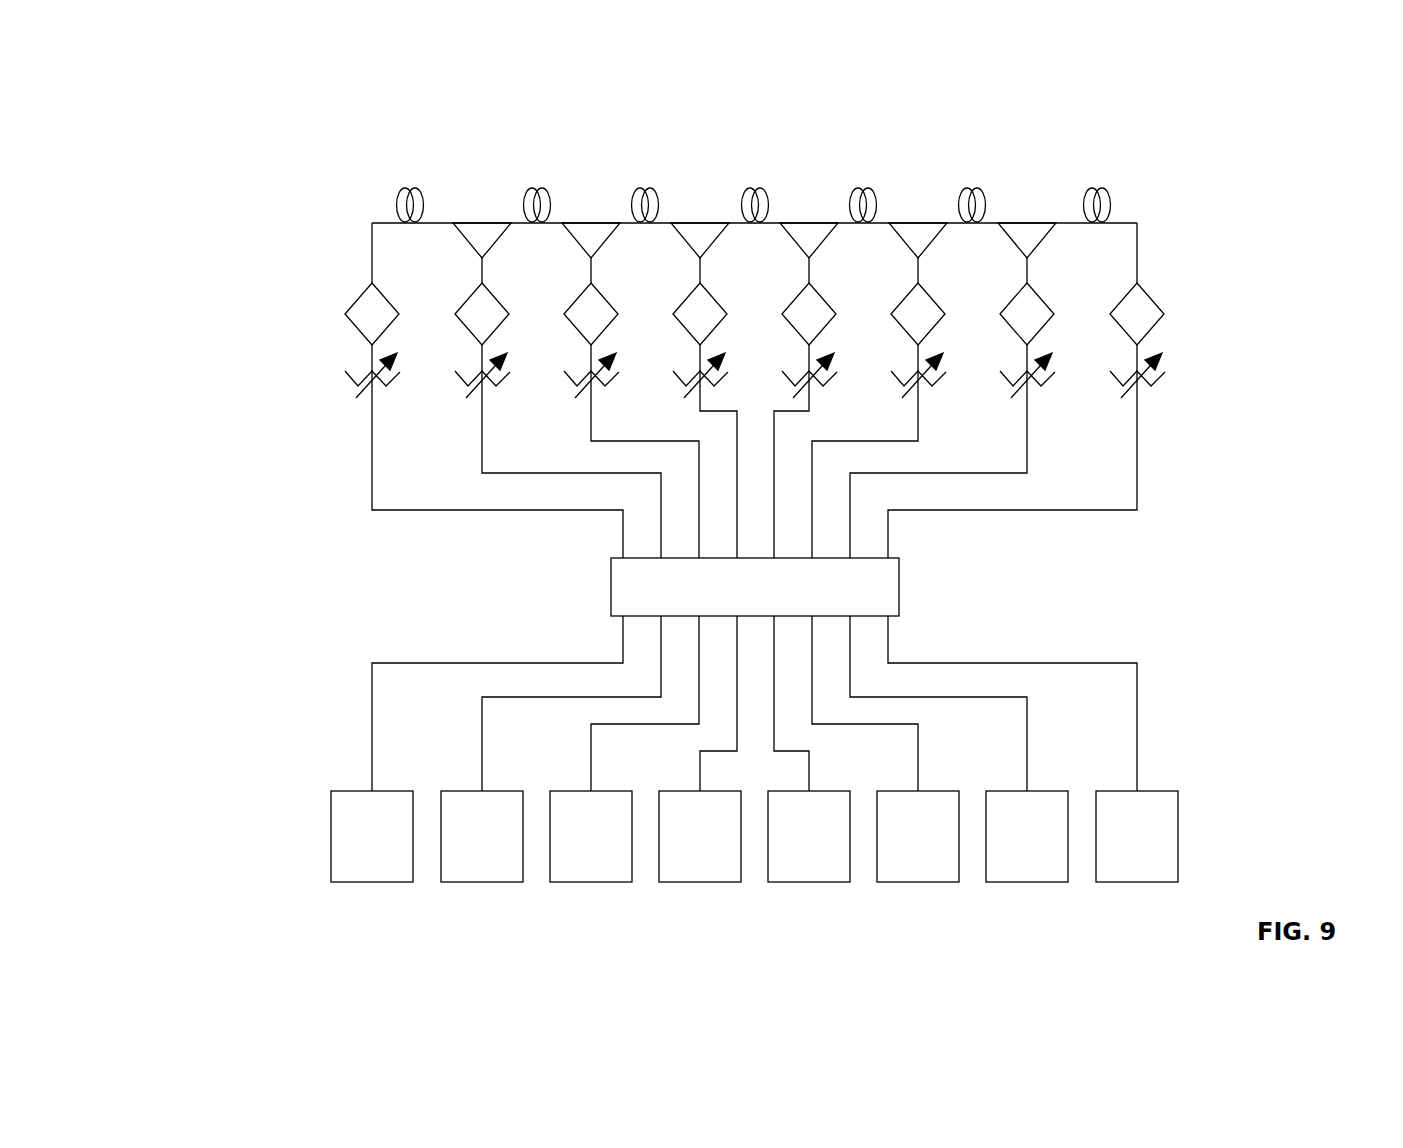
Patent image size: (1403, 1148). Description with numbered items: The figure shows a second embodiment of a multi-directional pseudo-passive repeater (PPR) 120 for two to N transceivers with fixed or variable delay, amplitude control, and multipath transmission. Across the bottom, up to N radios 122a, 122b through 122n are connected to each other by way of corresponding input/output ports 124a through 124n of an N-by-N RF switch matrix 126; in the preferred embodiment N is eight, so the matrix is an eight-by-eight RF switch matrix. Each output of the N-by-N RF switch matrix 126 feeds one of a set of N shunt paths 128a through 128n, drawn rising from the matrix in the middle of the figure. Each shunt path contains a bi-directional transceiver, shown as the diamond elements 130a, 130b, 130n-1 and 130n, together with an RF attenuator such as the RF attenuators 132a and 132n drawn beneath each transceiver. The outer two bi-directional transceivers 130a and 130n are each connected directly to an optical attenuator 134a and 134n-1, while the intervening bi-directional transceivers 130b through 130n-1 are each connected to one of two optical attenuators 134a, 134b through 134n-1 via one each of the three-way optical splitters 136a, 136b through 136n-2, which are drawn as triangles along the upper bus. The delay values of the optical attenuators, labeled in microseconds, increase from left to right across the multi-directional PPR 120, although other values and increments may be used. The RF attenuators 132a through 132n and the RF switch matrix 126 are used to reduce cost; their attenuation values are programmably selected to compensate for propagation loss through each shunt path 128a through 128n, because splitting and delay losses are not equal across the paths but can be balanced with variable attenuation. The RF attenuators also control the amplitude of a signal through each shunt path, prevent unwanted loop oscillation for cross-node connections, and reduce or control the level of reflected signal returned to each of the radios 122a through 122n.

The multi-directional PPR 120 is at (334, 100).
The radio 122a is at (370, 882).
The radio 122b is at (480, 882).
The radio 122n is at (1135, 882).
The input/output port 124a is at (622, 648).
The input/output port 124n is at (890, 648).
The N×N RF switch matrix 126 is at (900, 585).
The shunt path 128a is at (368, 479).
The shunt path 128n is at (1142, 479).
The bi-directional transceiver 130a is at (352, 337).
The bi-directional transceiver 130b is at (494, 295).
The bi-directional transceiver 130n-1 is at (1039, 290).
The bi-directional transceiver 130n is at (1165, 314).
The RF attenuator 132a is at (345, 372).
The RF attenuator 132n is at (1165, 380).
The optical attenuator 134a is at (410, 158).
The optical attenuator 134b is at (537, 158).
The optical attenuator 134n-1 is at (1098, 158).
The 3-way optical splitter 136a is at (470, 222).
The 3-way optical splitter 136b is at (580, 222).
The 3-way optical splitter 136n-2 is at (1018, 222).